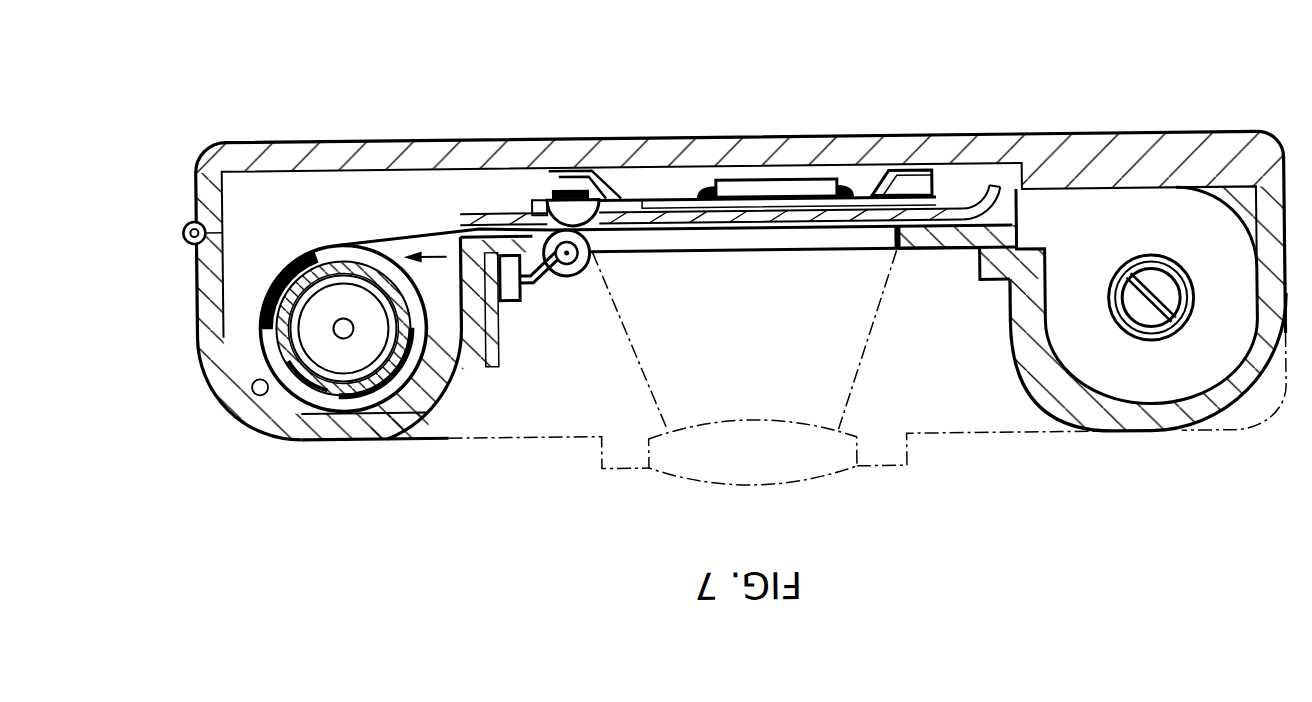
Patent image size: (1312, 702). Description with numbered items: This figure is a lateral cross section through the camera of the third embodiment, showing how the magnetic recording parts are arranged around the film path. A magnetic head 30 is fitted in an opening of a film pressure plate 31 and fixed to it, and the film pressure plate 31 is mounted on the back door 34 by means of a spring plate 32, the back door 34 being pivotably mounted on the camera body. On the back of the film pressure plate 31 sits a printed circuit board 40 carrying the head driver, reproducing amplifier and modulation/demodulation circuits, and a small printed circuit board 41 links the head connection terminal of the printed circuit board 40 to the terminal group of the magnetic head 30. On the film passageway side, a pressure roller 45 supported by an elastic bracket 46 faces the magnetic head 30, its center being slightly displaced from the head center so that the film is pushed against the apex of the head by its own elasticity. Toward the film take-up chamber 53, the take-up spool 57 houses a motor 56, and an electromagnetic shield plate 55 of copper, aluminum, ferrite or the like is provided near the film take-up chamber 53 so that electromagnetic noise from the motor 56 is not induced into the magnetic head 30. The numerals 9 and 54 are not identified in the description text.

The back door 34 is at (292, 144).
The film 9 is at (381, 245).
The magnetic head 30 is at (556, 210).
The small printed circuit board 41 is at (574, 194).
The printed circuit board 40 is at (777, 203).
The spring plate 32 is at (872, 180).
The film pressure plate 31 is at (978, 202).
The take-up spool 57 is at (262, 322).
The film take-up chamber 53 is at (262, 396).
The motor 56 is at (343, 363).
The electromagnetic shield plate 55 is at (505, 372).
The elastic bracket 46 is at (538, 292).
The pressure roller 45 is at (574, 279).
The right chamber wall 54 is at (1053, 384).